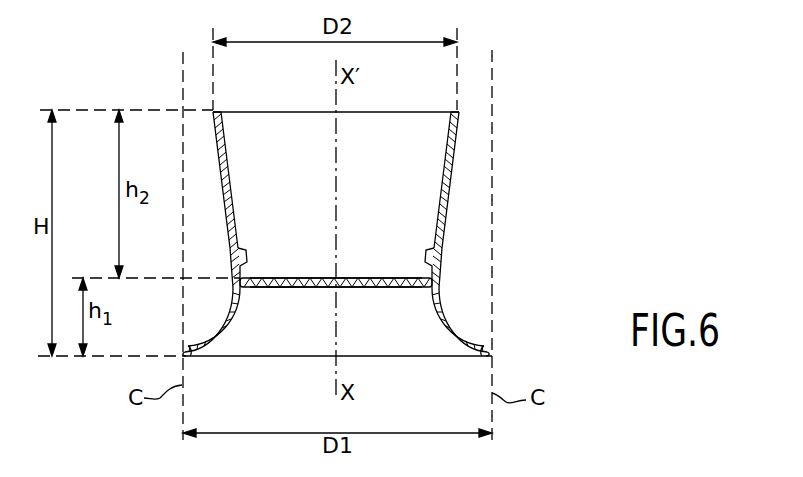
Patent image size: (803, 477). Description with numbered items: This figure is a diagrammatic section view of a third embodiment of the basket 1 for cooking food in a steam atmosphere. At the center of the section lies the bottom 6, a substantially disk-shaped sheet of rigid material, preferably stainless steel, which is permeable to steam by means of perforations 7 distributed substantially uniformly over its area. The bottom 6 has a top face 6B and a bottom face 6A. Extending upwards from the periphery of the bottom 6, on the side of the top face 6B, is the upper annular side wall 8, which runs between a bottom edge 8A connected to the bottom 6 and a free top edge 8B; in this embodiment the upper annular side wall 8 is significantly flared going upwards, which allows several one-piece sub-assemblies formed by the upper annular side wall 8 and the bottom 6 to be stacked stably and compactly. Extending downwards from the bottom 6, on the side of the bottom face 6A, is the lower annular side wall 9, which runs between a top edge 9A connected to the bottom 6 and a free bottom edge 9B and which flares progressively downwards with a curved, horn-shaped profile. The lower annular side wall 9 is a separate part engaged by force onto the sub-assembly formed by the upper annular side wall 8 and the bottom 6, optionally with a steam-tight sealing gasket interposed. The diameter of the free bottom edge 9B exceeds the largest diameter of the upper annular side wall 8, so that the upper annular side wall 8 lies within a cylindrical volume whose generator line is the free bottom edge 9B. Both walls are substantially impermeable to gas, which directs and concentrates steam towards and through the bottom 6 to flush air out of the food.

The basket 1 is at (510, 215).
The bottom 6 is at (314, 278).
The bottom face 6A is at (364, 288).
The top face 6B is at (376, 278).
The perforations 7 is at (296, 290).
The upper annular side wall 8 is at (454, 161).
The bottom edge 8A is at (242, 272).
The free top edge 8B is at (460, 112).
The lower annular side wall 9 is at (459, 322).
The top edge 9A is at (441, 279).
The free bottom edge 9B is at (490, 353).